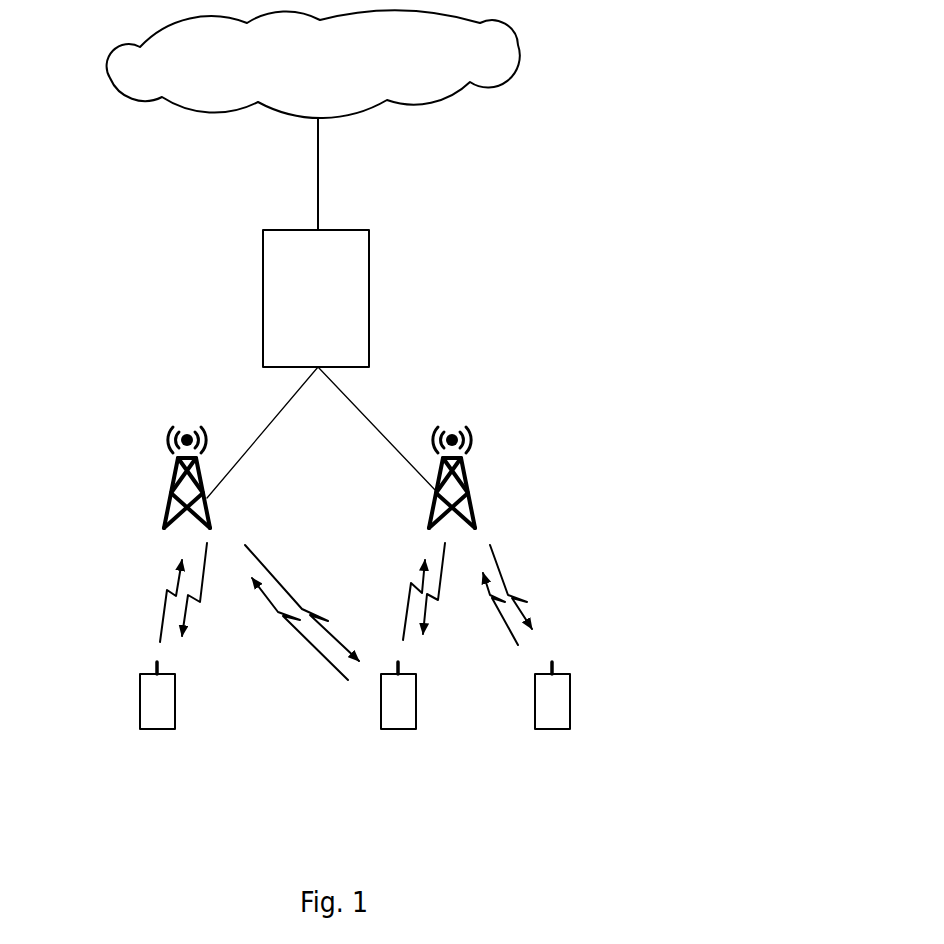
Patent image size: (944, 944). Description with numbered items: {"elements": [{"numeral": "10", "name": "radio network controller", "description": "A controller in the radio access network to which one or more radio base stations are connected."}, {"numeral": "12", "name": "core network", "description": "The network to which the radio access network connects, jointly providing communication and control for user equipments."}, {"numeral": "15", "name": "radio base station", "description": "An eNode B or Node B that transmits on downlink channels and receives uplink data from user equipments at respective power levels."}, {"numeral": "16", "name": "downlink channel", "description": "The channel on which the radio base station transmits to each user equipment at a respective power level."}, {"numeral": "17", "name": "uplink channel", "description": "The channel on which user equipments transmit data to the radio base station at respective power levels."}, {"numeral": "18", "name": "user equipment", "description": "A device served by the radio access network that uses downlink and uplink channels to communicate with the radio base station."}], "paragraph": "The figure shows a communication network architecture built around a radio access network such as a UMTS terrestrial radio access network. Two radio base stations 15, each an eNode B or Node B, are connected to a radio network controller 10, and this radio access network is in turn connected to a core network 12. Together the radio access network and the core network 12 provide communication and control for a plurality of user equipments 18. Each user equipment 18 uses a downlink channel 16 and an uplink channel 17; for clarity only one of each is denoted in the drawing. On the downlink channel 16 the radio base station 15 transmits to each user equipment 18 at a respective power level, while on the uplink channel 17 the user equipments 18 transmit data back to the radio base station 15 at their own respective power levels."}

The gateway / network controller 10 is at (369, 290).
The network (cloud) 12 is at (528, 55).
The base station 15 is at (173, 493).
The wireless link between base station and device 16 is at (258, 555).
The wireless link between base station and device 17 is at (165, 590).
The wireless device / terminal 18 is at (140, 697).